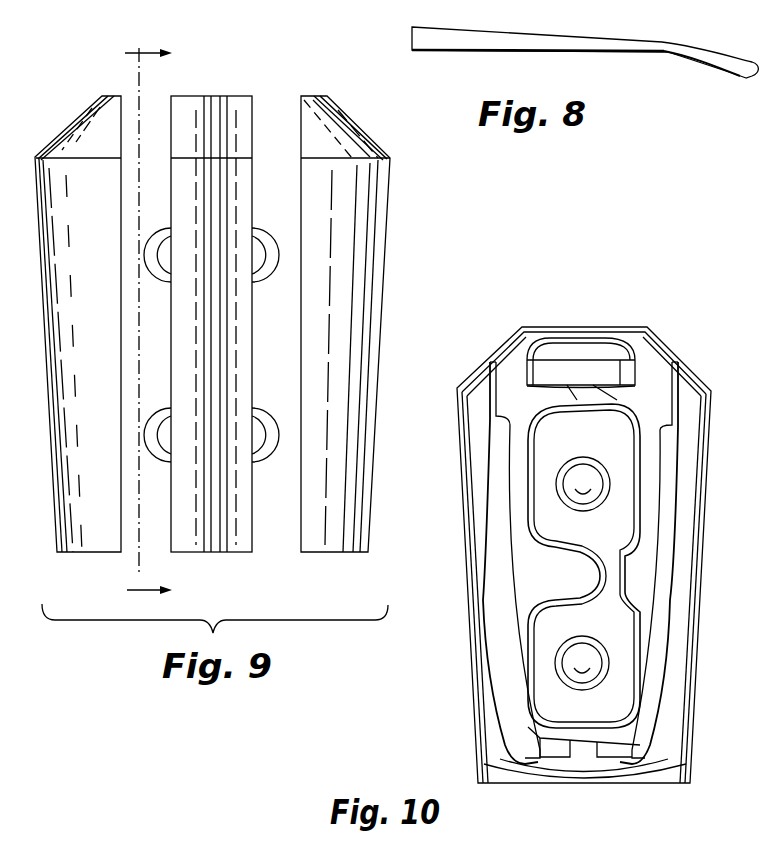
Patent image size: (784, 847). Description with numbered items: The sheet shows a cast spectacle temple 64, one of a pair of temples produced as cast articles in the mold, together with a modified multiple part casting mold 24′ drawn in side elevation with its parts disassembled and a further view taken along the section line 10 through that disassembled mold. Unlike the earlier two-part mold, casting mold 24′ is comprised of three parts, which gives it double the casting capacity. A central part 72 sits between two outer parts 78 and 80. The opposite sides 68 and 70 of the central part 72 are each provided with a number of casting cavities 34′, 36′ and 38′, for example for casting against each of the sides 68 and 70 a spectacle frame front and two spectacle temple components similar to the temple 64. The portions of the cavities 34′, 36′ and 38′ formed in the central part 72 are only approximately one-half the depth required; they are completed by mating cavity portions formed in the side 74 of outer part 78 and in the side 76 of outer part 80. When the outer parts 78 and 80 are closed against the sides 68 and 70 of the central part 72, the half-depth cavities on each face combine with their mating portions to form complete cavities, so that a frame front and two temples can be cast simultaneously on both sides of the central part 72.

In FIG. 8, the spectacle temple 64 is at (490, 30).
In FIG. 9, the section line 10— 10 is at (161, 322).
In FIG. 9, the outer part 78 is at (90, 120).
In FIG. 9, the side of outer part 74 is at (132, 330).
In FIG. 9, the casting mold 24′ is at (228, 82).
In FIG. 10, the casting mold 24′ is at (676, 340).
In FIG. 9, the central part 72 is at (255, 100).
In FIG. 10, the central part 72 is at (547, 326).
In FIG. 9, the side of central part 68 is at (172, 226).
In FIG. 10, the side of central part 68 is at (648, 592).
In FIG. 9, the side of central part 70 is at (252, 228).
In FIG. 9, the outer part 80 is at (348, 118).
In FIG. 9, the side of outer part 76 is at (302, 338).
In FIG. 10, the casting cavity 36′ is at (485, 549).
In FIG. 10, the casting cavity 38′ is at (673, 512).
In FIG. 10, the casting cavity 34′ is at (592, 588).